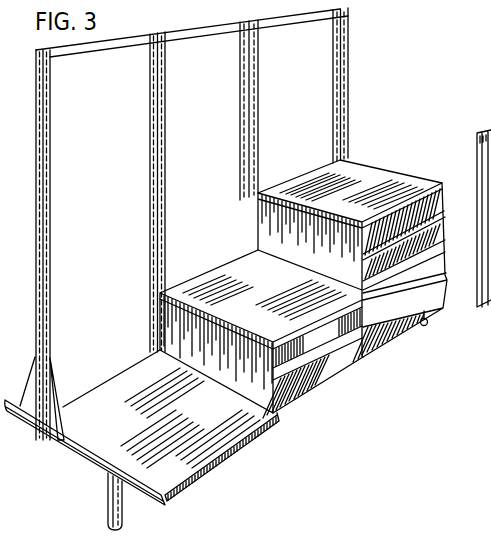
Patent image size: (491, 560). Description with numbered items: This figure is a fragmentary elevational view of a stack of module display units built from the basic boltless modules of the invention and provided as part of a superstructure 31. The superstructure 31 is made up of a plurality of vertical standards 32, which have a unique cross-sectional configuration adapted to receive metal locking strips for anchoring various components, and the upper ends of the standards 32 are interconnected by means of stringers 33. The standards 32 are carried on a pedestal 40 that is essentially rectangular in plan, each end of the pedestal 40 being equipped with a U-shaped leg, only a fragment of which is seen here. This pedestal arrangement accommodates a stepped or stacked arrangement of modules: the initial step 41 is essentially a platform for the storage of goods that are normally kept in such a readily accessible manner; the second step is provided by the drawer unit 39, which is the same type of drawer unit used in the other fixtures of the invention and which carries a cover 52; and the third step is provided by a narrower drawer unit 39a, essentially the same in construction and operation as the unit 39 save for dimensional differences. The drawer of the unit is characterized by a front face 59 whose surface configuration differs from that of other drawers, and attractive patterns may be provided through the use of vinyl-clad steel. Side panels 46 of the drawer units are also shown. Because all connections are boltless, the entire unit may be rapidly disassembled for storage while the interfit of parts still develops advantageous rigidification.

The superstructure 31 is at (255, 224).
The standards 32 is at (349, 121).
The stringers 33 is at (108, 48).
The drawer unit 39 is at (303, 271).
The narrower drawer unit 39a is at (392, 178).
The pedestal 40 is at (98, 477).
The initial step 41 is at (207, 450).
The side panel 46 is at (327, 246).
The cover 52 is at (278, 311).
The drawer front face 59 is at (343, 362).